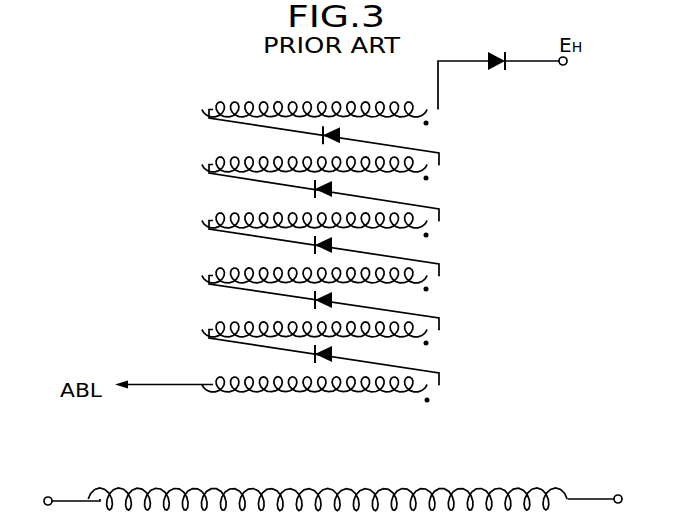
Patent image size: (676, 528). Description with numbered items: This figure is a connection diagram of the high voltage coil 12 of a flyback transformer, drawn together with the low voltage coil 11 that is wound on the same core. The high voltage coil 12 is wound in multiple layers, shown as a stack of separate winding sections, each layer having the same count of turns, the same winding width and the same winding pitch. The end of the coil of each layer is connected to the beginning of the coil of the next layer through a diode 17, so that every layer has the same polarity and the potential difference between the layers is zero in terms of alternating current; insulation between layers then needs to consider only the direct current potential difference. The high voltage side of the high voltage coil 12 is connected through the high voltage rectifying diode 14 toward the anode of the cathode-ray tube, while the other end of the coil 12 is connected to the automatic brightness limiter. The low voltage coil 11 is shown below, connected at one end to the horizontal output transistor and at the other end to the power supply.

The low voltage coil 11 is at (268, 488).
The high voltage coil 12 is at (399, 118).
The high voltage rectifying diode 14 is at (497, 72).
The diode 17 is at (318, 149).